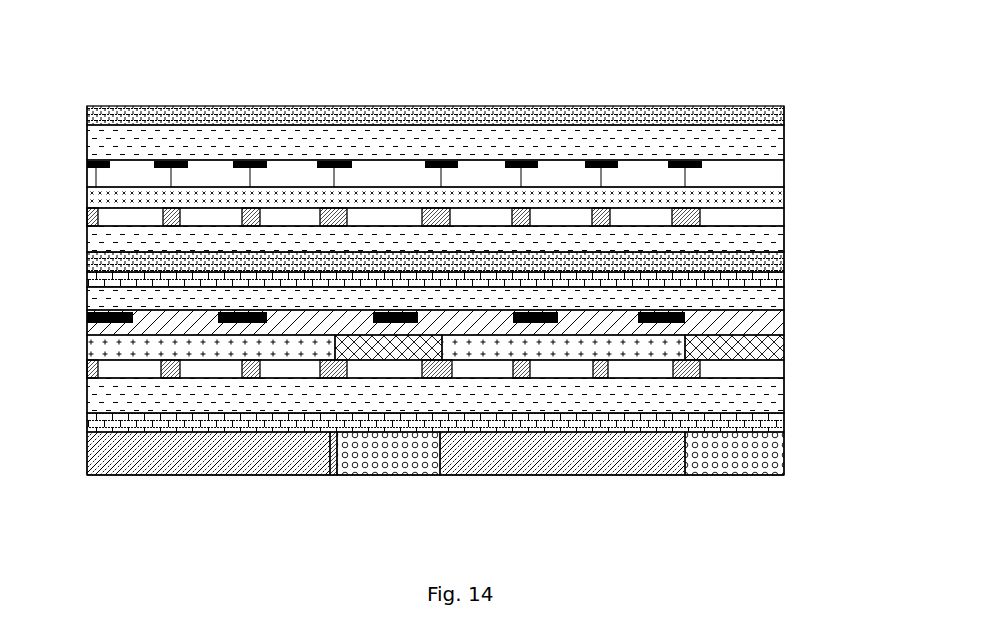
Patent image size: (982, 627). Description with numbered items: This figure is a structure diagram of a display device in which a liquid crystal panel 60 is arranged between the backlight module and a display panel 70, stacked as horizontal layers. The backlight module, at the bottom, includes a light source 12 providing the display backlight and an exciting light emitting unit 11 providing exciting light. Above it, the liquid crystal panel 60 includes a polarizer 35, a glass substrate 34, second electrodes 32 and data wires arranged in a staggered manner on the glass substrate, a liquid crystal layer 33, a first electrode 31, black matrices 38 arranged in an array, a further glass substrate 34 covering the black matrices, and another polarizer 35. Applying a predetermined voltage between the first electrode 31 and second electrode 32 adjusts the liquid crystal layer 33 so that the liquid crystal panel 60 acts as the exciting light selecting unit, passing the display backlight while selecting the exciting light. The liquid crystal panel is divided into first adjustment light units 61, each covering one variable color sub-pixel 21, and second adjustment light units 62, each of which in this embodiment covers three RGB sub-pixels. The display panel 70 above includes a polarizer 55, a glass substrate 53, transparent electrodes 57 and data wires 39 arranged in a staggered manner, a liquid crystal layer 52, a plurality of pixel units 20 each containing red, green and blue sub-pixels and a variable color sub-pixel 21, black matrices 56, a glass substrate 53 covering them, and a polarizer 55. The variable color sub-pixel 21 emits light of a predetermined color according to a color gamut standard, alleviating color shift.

The exciting light emitting unit 11 is at (712, 445).
The light source 12 is at (600, 290).
The pixel unit 20 is at (451, 182).
The variable color sub-pixel 21 is at (418, 174).
The first electrode 31 is at (352, 315).
The second electrode 32 is at (208, 368).
The liquid crystal layer 33 is at (784, 352).
The glass substrate 34 is at (277, 395).
The polarizer 35 is at (460, 283).
The black matrix 38 is at (543, 323).
The data wire 39 is at (88, 213).
The liquid crystal layer 52 is at (618, 206).
The glass substrate 53 is at (278, 228).
The polarizer 55 is at (457, 240).
The black matrix 56 is at (337, 158).
The transparent electrode 57 is at (145, 218).
The liquid crystal panel 60 is at (808, 283).
The first adjustment light unit 61 is at (757, 468).
The second adjustment light unit 62 is at (642, 347).
The display panel 70 is at (808, 109).